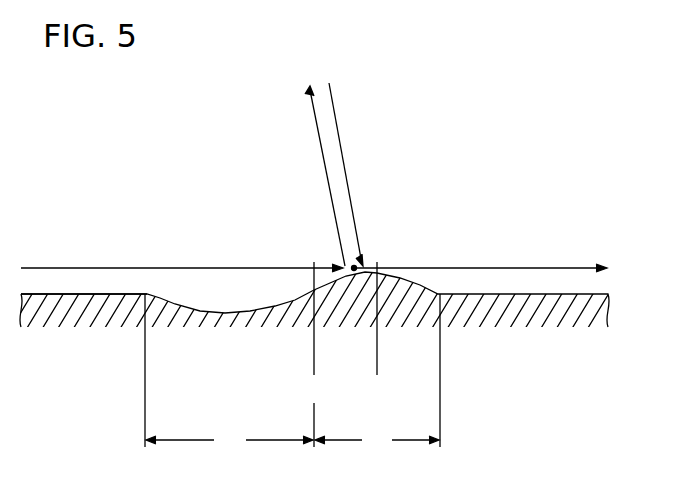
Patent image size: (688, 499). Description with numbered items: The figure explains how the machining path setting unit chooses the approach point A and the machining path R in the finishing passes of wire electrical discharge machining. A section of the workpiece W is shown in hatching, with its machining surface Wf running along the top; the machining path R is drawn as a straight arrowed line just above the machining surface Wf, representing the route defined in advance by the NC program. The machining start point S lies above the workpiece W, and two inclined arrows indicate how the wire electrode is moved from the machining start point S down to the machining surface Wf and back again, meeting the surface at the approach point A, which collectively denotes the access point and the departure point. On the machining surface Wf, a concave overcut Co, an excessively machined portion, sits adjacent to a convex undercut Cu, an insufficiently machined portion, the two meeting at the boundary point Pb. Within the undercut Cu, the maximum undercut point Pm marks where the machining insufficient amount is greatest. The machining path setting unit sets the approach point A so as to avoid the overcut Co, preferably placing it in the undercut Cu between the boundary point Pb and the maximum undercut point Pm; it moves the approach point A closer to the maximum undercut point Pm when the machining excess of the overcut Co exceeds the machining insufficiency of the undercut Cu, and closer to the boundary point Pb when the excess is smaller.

The workpiece W is at (53, 300).
The machining surface Wf is at (115, 294).
The machining path R is at (487, 268).
The machining start point S is at (314, 82).
The approach point A is at (346, 270).
The boundary point Pb is at (314, 354).
The maximum undercut point Pm is at (377, 330).
The overcut Co is at (229, 372).
The undercut Cu is at (377, 372).